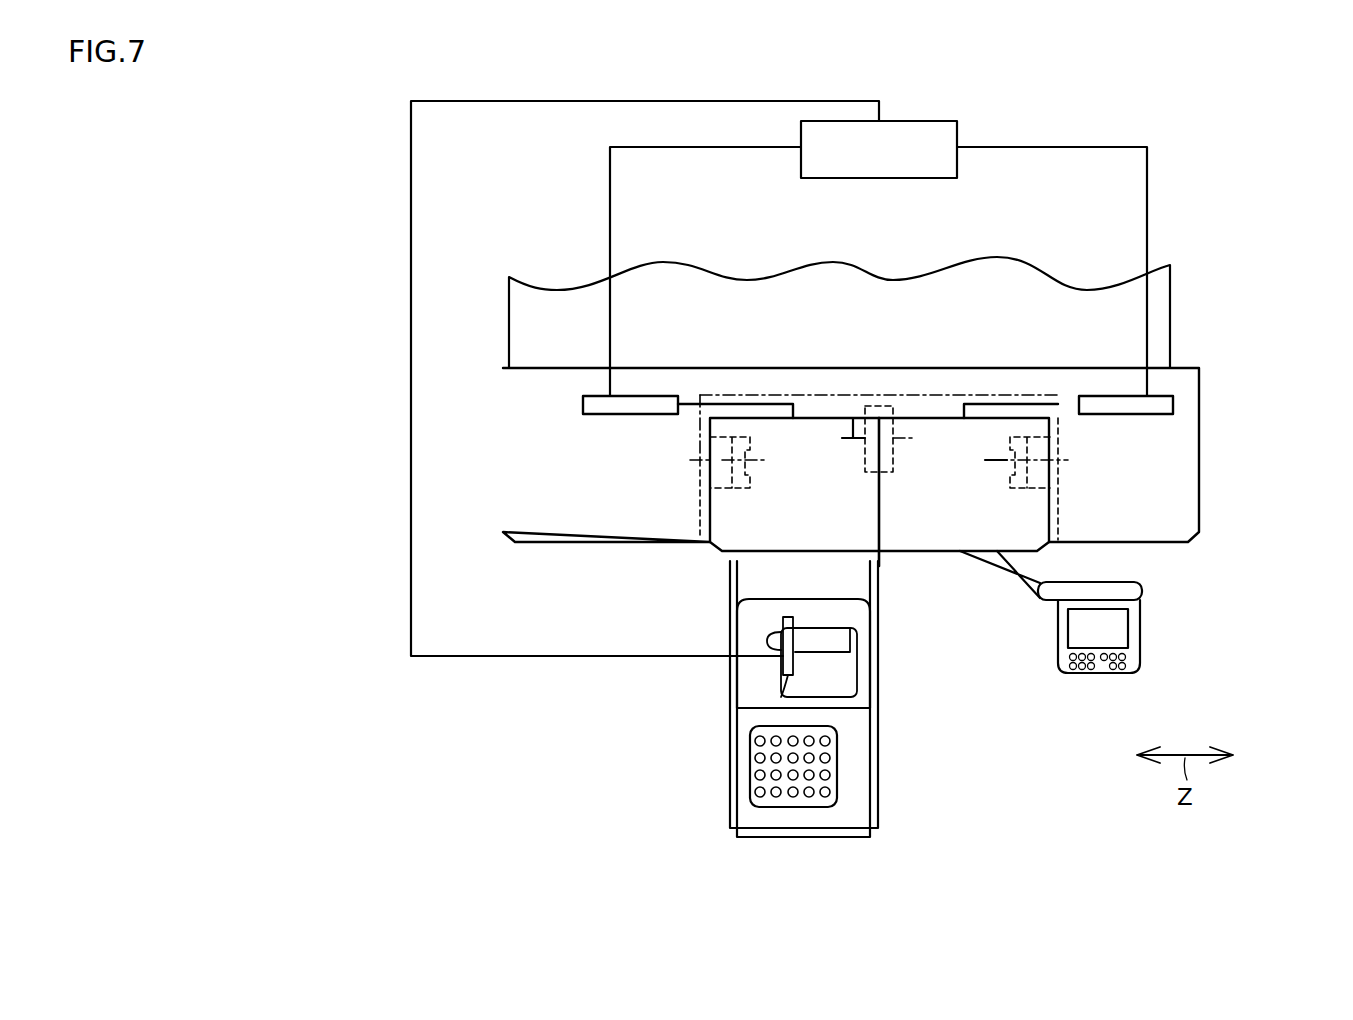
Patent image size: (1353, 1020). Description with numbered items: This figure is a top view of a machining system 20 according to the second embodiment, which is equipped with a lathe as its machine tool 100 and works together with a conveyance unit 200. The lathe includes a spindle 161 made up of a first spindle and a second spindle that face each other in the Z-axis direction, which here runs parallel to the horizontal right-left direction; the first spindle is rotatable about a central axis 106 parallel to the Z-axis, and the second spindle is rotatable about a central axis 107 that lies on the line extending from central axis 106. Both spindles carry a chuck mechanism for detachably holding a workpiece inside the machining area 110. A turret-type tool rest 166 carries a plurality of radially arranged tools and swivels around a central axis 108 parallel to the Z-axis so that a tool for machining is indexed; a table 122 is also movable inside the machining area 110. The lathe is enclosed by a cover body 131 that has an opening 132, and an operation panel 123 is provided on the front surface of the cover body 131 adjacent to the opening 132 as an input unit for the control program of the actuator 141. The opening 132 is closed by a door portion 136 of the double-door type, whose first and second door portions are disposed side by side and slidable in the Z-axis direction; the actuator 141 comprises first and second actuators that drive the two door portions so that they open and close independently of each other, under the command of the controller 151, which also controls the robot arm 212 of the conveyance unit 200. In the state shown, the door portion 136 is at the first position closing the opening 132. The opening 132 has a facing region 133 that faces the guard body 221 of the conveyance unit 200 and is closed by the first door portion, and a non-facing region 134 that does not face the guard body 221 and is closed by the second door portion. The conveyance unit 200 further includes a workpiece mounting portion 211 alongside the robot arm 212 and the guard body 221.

The machining system 20 is at (1192, 151).
The machine tool 100 is at (557, 257).
The central axis 106 is at (700, 440).
The central axis 107 is at (995, 460).
The central axis 108 is at (853, 418).
The machining area 110 is at (948, 395).
The table 122 is at (738, 600).
The operation panel 123 is at (1140, 637).
The cover body 131 is at (545, 543).
The opening 132 is at (882, 572).
The facing region 133 is at (742, 556).
The non-facing region 134 is at (1030, 556).
The door portion 136 is at (710, 505).
The actuator 141 is at (600, 405).
The controller 151 is at (912, 120).
The spindle 161 is at (735, 437).
The tool rest 166 is at (879, 406).
The conveyance unit 200 is at (719, 861).
The workpiece mounting portion 211 is at (830, 784).
The robot arm 212 is at (788, 675).
The guard body 221 is at (878, 745).